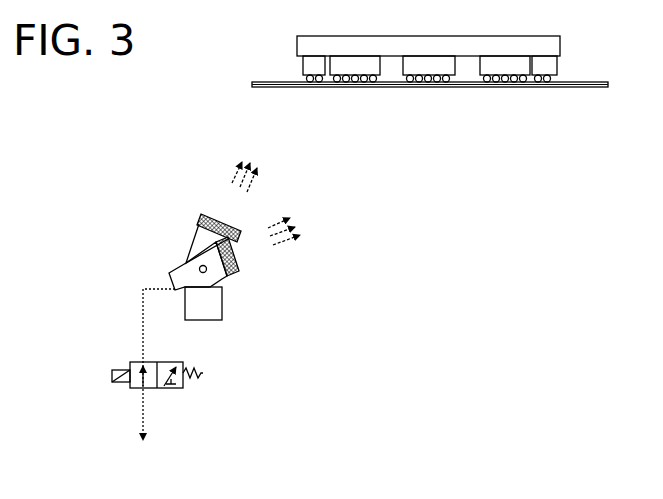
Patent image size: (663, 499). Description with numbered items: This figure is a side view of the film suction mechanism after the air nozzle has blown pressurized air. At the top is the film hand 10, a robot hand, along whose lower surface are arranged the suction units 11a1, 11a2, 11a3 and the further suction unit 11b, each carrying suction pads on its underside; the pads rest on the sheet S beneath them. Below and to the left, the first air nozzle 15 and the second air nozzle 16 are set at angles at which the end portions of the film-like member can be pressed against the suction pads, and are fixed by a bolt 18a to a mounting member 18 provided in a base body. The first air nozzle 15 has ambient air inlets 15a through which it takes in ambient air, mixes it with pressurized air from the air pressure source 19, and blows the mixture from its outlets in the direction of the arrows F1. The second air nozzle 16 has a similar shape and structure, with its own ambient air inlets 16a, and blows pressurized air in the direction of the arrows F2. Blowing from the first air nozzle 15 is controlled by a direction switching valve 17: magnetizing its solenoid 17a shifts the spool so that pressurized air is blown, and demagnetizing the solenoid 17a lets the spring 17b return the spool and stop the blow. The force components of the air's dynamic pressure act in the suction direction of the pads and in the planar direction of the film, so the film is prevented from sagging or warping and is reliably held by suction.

The film hand 10 is at (548, 46).
The suction unit 11a1 is at (362, 67).
The suction unit 11a2 is at (435, 68).
The suction unit 11a3 is at (497, 67).
The suction unit 11b is at (308, 70).
The substrate / solder layer S is at (577, 88).
The first air nozzle 15 is at (223, 278).
The ambient air inlets 15a is at (238, 263).
The second air nozzle 16 is at (203, 238).
The ambient air inlets 16a is at (202, 221).
The direction switching valve 17 is at (133, 390).
The solenoid 17a is at (118, 368).
The spring 17b is at (205, 373).
The mounting member 18 is at (205, 311).
The bolt 18a is at (198, 268).
The air pressure source 19 is at (147, 444).
The arrows F1 is at (298, 229).
The arrows F2 is at (249, 163).